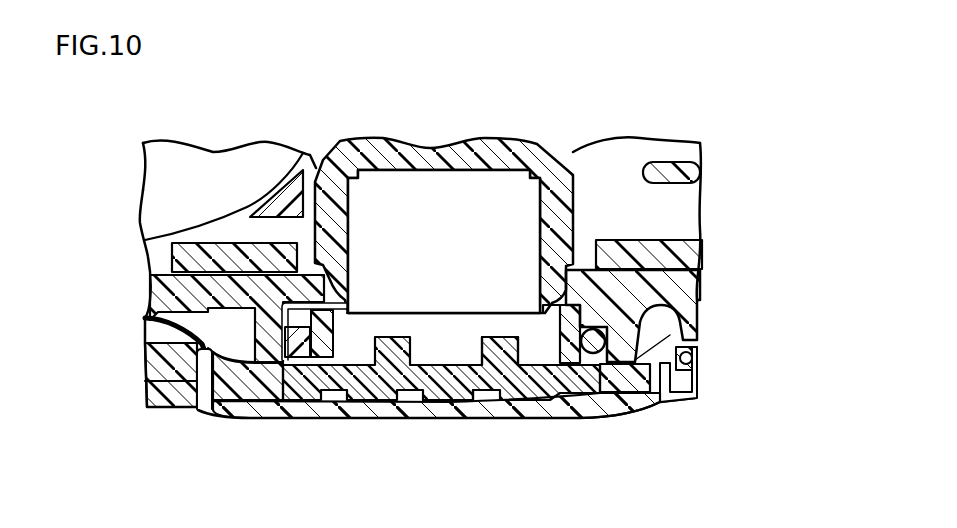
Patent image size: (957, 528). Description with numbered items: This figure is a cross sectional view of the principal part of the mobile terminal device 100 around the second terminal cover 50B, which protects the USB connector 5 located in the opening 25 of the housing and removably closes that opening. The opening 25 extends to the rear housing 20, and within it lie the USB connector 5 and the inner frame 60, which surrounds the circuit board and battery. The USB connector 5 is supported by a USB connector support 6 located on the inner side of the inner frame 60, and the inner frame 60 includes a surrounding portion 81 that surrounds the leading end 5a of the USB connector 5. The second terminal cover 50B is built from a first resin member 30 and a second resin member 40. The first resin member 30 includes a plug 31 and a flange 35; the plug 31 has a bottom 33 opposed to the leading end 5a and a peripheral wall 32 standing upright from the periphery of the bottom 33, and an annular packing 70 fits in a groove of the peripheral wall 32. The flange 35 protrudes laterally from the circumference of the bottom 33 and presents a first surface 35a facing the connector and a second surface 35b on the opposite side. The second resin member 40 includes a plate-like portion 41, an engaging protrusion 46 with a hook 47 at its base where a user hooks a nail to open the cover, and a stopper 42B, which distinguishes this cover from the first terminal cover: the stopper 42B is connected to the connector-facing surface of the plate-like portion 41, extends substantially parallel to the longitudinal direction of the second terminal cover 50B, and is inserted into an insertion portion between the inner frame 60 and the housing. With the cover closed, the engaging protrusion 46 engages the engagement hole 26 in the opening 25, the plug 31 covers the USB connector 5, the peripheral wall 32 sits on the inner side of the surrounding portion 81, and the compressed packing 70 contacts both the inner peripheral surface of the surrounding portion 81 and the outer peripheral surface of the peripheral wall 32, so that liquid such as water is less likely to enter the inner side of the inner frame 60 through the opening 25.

The mobile terminal device 100 is at (749, 81).
The USB connector 5 is at (411, 195).
The leading end of USB connector 5a is at (467, 315).
The USB connector support 6 is at (470, 160).
The inner frame 60 is at (682, 289).
The engaging protrusion 46 is at (670, 335).
The hook 47 is at (678, 378).
The engagement hole 26 is at (670, 357).
The stopper 42B is at (180, 323).
The rear housing 20 is at (165, 395).
The opening 25 is at (203, 368).
The surrounding portion 81 is at (283, 355).
The second surface 35b is at (278, 400).
The first surface 35a is at (287, 363).
The second terminal cover 50B is at (355, 470).
The first resin member 30 is at (378, 377).
The second resin member 40 is at (421, 420).
The plate-like portion 41 is at (446, 410).
The plug 31 is at (502, 470).
The bottom 33 is at (523, 387).
The peripheral wall 32 is at (570, 347).
The packing 70 is at (597, 343).
The flange 35 is at (633, 390).